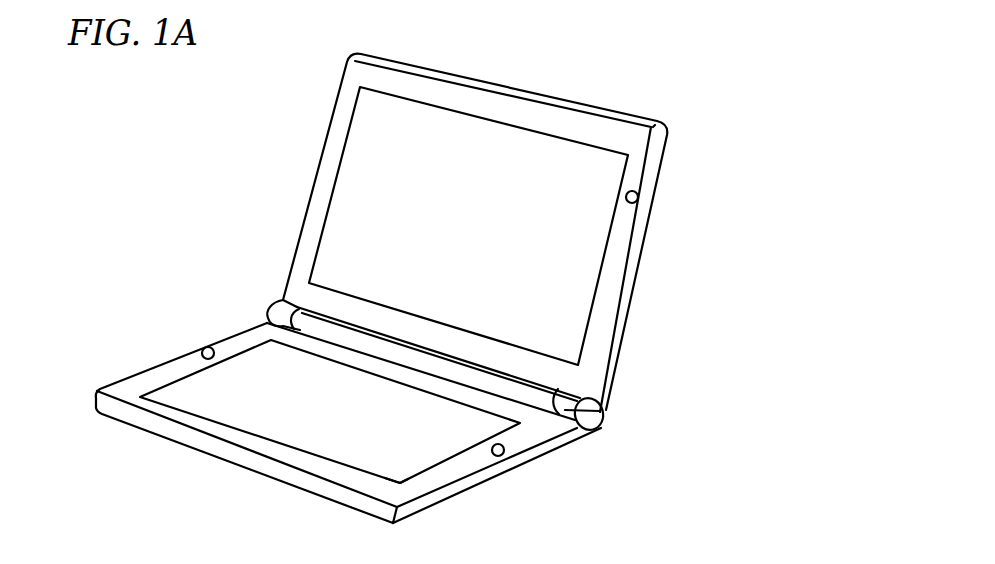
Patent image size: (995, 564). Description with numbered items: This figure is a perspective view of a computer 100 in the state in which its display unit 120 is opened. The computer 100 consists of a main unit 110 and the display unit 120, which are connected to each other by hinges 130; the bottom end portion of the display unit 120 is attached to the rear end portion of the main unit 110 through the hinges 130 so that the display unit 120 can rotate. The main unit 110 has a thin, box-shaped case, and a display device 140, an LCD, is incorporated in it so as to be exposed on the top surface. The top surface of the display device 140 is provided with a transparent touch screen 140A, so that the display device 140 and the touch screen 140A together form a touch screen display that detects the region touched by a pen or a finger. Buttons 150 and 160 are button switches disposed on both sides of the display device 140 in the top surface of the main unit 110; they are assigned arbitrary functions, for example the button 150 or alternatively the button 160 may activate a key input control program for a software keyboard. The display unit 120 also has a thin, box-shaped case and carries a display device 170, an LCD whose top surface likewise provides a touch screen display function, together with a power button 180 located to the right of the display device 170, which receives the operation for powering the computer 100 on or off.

The computer 100 is at (282, 110).
The main unit 110 is at (560, 450).
The display unit 120 is at (669, 127).
The hinges 130 is at (601, 419).
The display device (LCD) 140 is at (420, 463).
The transparent touch screen 140A is at (381, 474).
The button 150 is at (505, 453).
The button 160 is at (204, 348).
The display device (LCD) 170 is at (592, 235).
The power button 180 is at (638, 199).